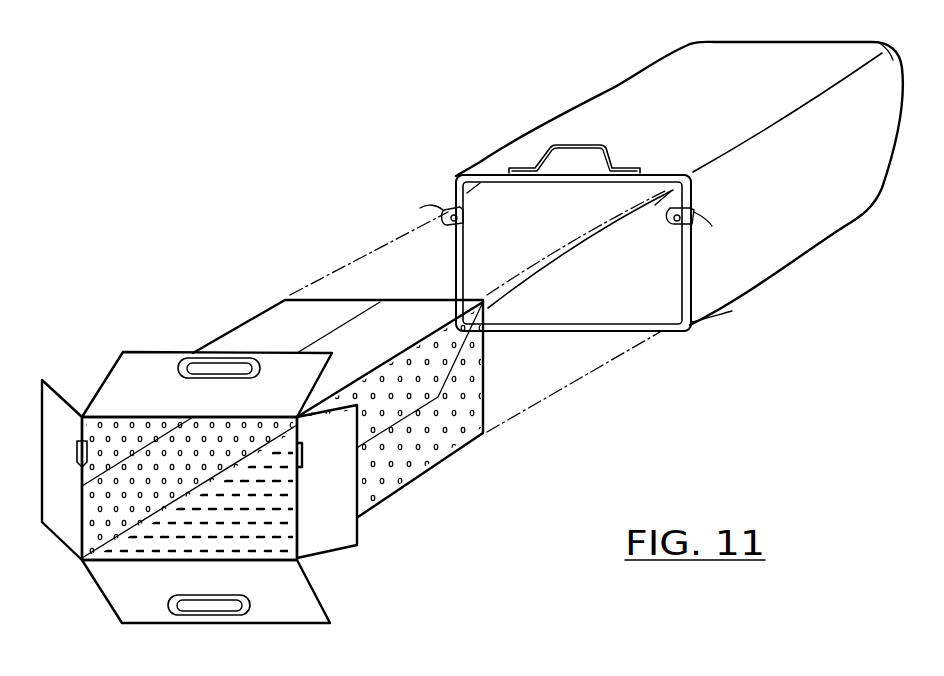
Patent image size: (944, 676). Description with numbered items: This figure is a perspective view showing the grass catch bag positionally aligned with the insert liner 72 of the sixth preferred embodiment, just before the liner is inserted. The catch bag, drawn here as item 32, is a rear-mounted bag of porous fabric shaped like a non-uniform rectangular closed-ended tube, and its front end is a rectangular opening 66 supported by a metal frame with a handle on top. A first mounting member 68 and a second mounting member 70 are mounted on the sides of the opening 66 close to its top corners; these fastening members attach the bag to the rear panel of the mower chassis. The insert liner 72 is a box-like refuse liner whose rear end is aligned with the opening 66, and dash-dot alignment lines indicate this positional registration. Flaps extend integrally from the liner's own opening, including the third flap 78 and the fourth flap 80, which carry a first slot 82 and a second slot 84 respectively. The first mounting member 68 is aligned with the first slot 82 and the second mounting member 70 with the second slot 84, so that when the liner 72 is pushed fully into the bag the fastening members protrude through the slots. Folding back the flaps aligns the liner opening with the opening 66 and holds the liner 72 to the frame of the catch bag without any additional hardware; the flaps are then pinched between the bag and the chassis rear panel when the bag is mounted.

The soft-sided bag 32 is at (501, 96).
The opening 66 is at (600, 332).
The first mounting member 68 is at (697, 216).
The second mounting member 70 is at (444, 221).
The insert liner 72 is at (220, 307).
The third flap 78 is at (62, 512).
The fourth flap 80 is at (327, 527).
The first slot 82 is at (305, 457).
The second slot 84 is at (78, 446).